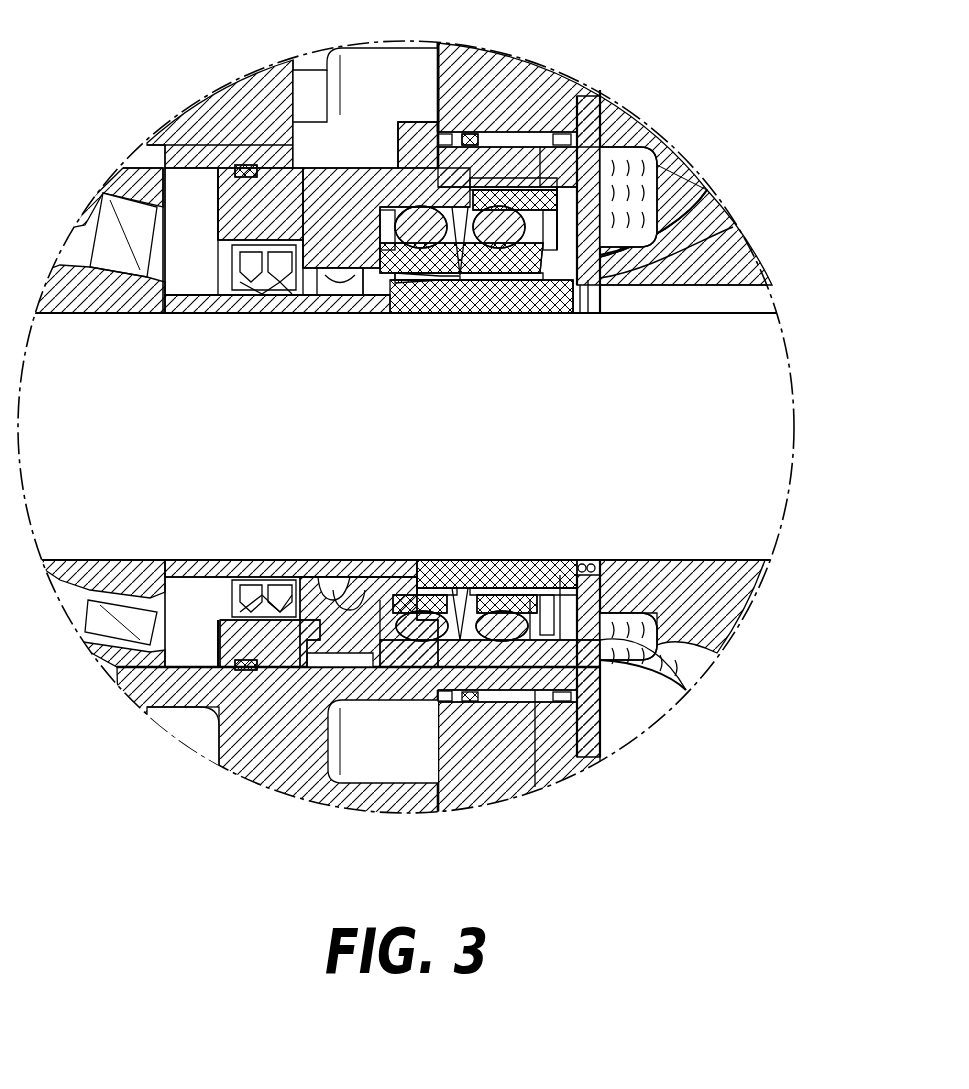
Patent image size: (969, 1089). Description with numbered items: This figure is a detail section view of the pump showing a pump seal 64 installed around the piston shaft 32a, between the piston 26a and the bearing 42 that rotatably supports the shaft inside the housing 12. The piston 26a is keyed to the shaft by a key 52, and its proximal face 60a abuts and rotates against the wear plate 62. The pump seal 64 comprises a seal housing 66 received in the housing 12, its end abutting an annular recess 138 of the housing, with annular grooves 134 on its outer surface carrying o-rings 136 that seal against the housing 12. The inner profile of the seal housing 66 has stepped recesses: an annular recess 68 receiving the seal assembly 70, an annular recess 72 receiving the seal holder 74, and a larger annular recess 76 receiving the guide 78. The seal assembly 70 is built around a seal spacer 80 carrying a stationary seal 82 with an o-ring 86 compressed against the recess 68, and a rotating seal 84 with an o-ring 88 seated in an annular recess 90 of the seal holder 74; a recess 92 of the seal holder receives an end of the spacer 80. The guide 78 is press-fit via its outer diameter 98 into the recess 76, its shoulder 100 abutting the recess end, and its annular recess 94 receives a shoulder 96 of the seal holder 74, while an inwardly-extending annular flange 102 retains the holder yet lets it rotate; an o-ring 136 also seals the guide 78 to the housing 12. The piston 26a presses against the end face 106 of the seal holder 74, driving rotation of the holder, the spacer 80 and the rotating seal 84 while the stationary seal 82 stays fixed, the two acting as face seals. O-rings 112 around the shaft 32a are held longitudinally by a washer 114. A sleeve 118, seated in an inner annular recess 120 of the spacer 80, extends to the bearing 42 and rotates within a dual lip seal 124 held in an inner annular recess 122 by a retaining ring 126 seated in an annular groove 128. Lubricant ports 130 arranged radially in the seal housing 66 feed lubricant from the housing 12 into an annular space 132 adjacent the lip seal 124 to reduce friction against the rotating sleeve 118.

The housing 12 is at (148, 150).
The piston 26a is at (742, 230).
The piston shaft 32a is at (52, 438).
The bearing 42 is at (128, 170).
The key 52 is at (758, 295).
The proximal face 60a is at (698, 205).
The wear plate 62 is at (582, 130).
The pump seal 64 is at (482, 82).
The seal housing 66 is at (277, 187).
The annular recess 68 is at (345, 195).
The seal assembly 70 is at (466, 318).
The annular recess 72 is at (497, 180).
The seal holder 74 is at (530, 310).
The annular recess 76 is at (555, 135).
The guide 78 is at (603, 142).
The seal spacer 80 is at (440, 580).
The stationary seal 82 is at (395, 600).
The rotating seal 84 is at (480, 607).
The o-ring 86 is at (430, 570).
The o-ring 88 is at (505, 590).
The annular recess 90 is at (525, 607).
The recess 92 is at (574, 568).
The annular recess 94 is at (615, 590).
The shoulder 96 is at (590, 572).
The outer diameter 98 is at (548, 132).
The shoulder 100 is at (540, 702).
The annular flange 102 is at (655, 163).
The end face 106 is at (716, 210).
The o-rings 112 is at (583, 305).
The washer 114 is at (603, 295).
The sleeve 118 is at (250, 312).
The inner annular recess 120 is at (405, 308).
The inner annular recess 122 is at (300, 590).
The lip seal 124 is at (258, 590).
The retaining ring 126 is at (243, 588).
The annular groove 128 is at (198, 580).
The lubricant ports 130 is at (325, 305).
The annular space 132 is at (352, 305).
The annular grooves 134 is at (437, 133).
The o-rings 136 is at (468, 135).
The annular recess 138 is at (216, 165).